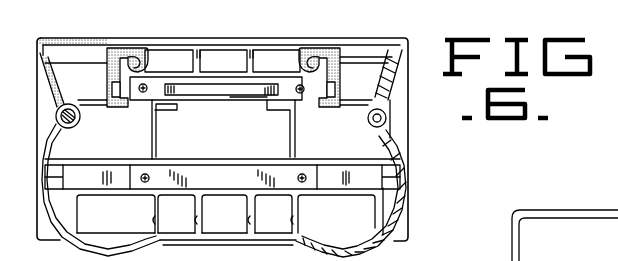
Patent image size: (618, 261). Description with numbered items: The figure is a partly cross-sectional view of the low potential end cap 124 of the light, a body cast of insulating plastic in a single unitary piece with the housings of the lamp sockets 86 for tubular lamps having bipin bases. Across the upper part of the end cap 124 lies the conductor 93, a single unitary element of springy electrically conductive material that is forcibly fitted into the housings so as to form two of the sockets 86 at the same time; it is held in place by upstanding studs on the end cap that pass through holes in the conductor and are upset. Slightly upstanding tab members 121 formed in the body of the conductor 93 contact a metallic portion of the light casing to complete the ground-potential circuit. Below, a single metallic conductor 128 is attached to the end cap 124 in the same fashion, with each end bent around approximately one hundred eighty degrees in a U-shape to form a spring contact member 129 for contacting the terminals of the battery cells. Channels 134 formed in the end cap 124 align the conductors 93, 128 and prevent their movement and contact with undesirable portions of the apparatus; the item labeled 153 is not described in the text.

The socket 86 is at (152, 20).
The conductor 93 is at (157, 83).
The upstanding tab members 121 is at (200, 88).
The end cap 124 is at (411, 143).
The metallic conductor 128 is at (226, 175).
The spring contact member 129 is at (122, 170).
The channels 134 is at (172, 97).
The adjacent view element 153 is at (577, 220).